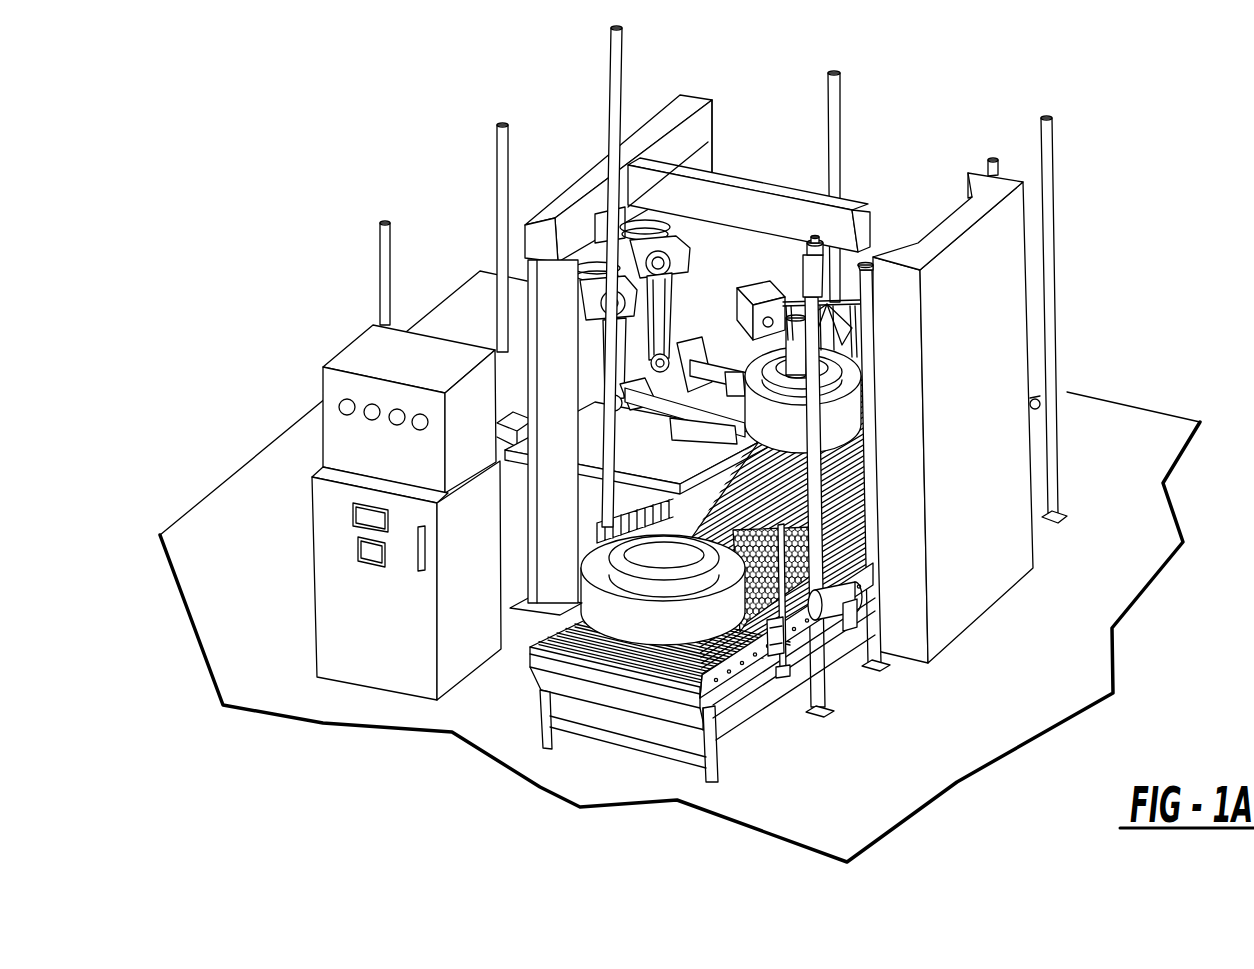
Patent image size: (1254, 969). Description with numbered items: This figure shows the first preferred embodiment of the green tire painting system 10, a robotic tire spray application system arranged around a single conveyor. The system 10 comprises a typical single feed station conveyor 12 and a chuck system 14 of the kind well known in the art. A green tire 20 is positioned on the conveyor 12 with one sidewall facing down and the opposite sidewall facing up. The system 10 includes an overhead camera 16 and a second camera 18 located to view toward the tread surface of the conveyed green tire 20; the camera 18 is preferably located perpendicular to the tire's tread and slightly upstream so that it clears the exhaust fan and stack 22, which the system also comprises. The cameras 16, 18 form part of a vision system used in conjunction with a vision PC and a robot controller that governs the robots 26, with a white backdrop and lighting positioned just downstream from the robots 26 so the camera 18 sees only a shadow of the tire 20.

The green tire painting system 10 is at (317, 318).
The single feed station conveyor 12 is at (497, 708).
The chuck system 14 is at (873, 256).
The overhead camera 16 is at (850, 300).
The camera 18 is at (758, 280).
The green tire 20 is at (843, 423).
The exhaust fan and stack 22 is at (1005, 248).
The robots 26 is at (757, 300).